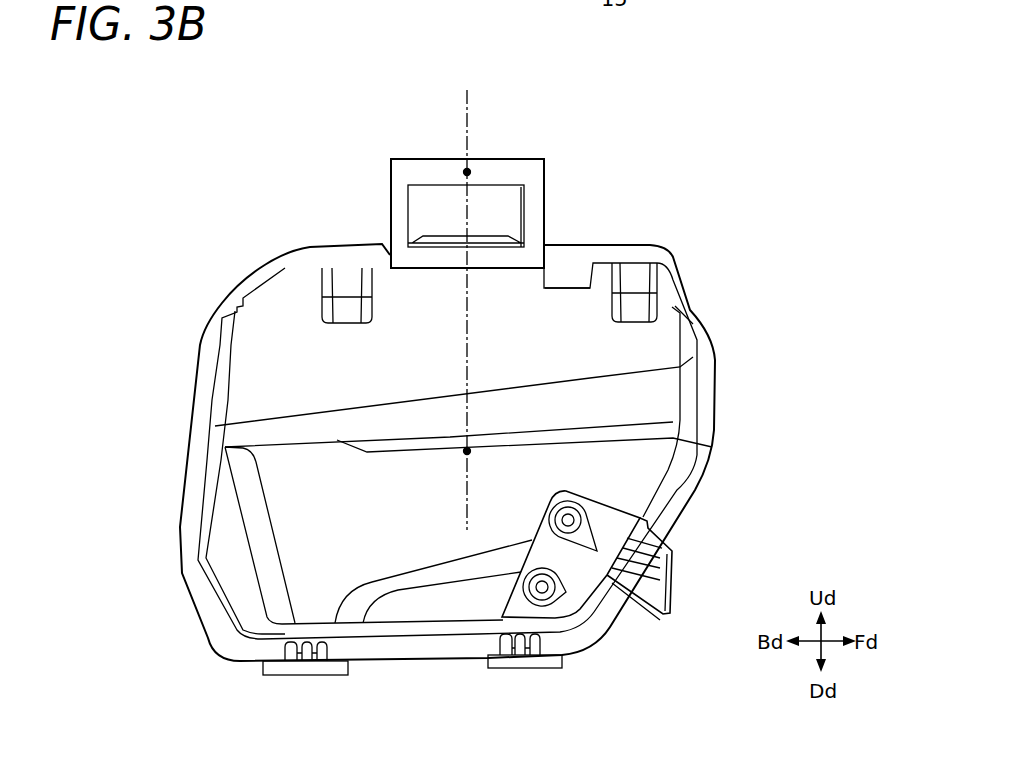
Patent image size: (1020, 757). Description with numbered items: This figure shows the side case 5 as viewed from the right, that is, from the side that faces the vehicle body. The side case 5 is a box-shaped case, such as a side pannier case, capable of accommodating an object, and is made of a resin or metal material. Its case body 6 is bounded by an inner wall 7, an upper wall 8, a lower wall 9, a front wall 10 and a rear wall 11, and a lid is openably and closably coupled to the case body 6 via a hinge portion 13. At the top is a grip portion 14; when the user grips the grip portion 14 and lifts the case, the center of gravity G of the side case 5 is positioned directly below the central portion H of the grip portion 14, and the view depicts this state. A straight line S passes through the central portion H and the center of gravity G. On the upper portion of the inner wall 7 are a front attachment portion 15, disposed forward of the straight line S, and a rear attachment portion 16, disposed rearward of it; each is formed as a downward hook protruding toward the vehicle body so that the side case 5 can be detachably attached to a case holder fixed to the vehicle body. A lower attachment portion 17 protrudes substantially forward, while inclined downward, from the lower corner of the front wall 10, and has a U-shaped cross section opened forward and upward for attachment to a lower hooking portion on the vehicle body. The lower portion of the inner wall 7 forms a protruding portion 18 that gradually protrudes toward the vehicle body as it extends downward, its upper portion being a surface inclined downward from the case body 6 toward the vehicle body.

The side case 5 is at (248, 186).
The case body 6 is at (188, 582).
The inner wall 7 is at (400, 365).
The upper wall 8 is at (572, 243).
The lower wall 9 is at (413, 661).
The front wall 10 is at (713, 421).
The rear wall 11 is at (188, 483).
The hinge portion 13 is at (290, 676).
The grip portion 14 is at (505, 158).
The front attachment portion 15 is at (634, 314).
The rear attachment portion 16 is at (347, 313).
The lower attachment portion 17 is at (677, 572).
The protruding portion 18 is at (590, 482).
The straight line S is at (465, 133).
The central portion H is at (455, 174).
The center of gravity G is at (458, 462).